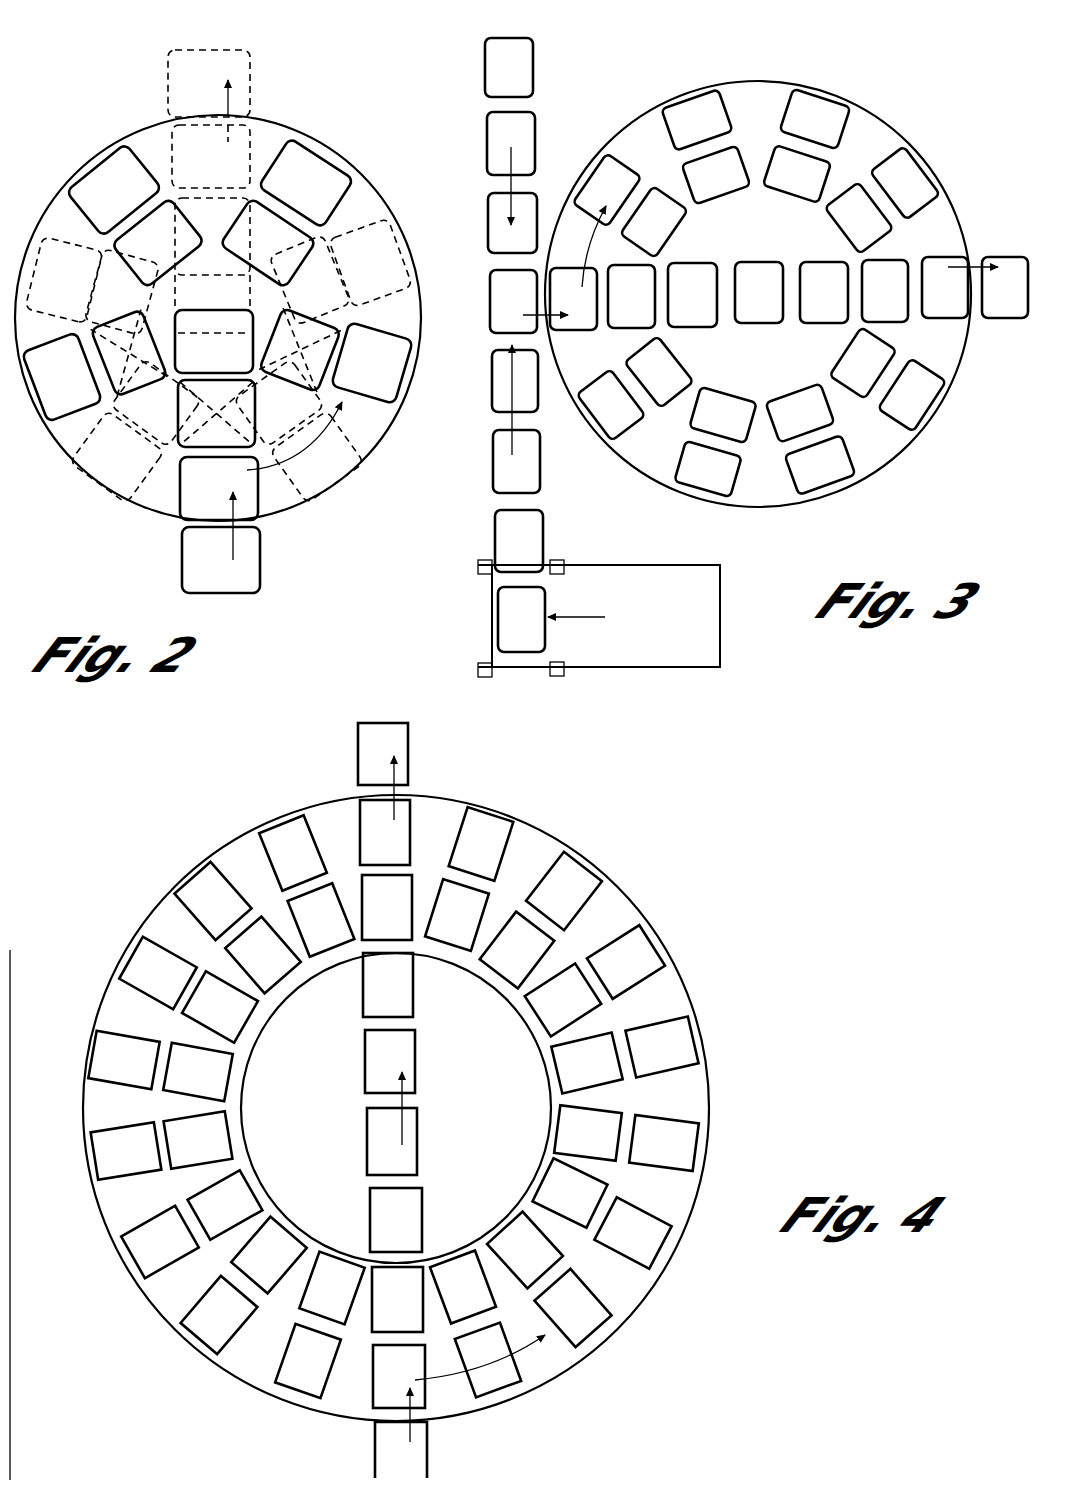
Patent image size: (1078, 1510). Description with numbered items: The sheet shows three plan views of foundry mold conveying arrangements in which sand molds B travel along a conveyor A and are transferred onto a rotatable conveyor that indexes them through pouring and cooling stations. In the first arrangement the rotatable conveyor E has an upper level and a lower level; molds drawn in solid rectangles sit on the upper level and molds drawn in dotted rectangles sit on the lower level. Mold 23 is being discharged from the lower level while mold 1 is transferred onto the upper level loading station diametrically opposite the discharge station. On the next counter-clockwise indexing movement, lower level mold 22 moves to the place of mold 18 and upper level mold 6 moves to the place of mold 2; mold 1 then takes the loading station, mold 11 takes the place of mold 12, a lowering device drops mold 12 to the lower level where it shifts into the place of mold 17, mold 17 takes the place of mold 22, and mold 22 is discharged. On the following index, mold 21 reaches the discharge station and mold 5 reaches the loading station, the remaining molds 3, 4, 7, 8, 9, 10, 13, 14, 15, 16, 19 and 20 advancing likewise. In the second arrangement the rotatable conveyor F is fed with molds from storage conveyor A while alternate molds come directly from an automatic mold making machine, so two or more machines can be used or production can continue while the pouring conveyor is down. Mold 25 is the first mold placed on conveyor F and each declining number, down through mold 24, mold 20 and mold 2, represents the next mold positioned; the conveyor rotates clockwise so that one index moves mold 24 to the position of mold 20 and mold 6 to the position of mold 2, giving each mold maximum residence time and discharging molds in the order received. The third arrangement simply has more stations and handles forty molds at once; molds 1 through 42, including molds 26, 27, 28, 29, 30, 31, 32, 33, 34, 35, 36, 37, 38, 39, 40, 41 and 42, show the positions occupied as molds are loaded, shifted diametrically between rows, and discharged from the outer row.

In FIG. 2, the mold 1 is at (221, 560).
In FIG. 3, the mold 1 is at (513, 301).
In FIG. 4, the mold 1 is at (401, 1450).
In FIG. 2, the mold 2 is at (219, 508).
In FIG. 3, the mold 2 is at (560, 299).
In FIG. 4, the mold 2 is at (399, 1393).
In FIG. 2, the mold 3 is at (330, 396).
In FIG. 3, the mold 3 is at (696, 119).
In FIG. 4, the mold 3 is at (513, 1324).
In FIG. 2, the mold 4 is at (305, 183).
In FIG. 3, the mold 4 is at (905, 182).
In FIG. 4, the mold 4 is at (664, 1143).
In FIG. 2, the mold 5 is at (114, 190).
In FIG. 3, the mold 5 is at (912, 394).
In FIG. 4, the mold 5 is at (626, 962).
In FIG. 2, the mold 6 is at (62, 377).
In FIG. 3, the mold 6 is at (707, 469).
In FIG. 4, the mold 6 is at (481, 844).
In FIG. 2, the mold 7 is at (216, 413).
In FIG. 3, the mold 7 is at (631, 296).
In FIG. 4, the mold 7 is at (293, 852).
In FIG. 2, the mold 8 is at (300, 350).
In FIG. 3, the mold 8 is at (716, 175).
In FIG. 4, the mold 8 is at (158, 973).
In FIG. 2, the mold 9 is at (268, 243).
In FIG. 3, the mold 9 is at (859, 218).
In FIG. 4, the mold 9 is at (126, 1150).
In FIG. 2, the mold 10 is at (158, 243).
In FIG. 3, the mold 10 is at (863, 363).
In FIG. 4, the mold 10 is at (219, 1315).
In FIG. 2, the mold 11 is at (129, 353).
In FIG. 3, the mold 11 is at (722, 415).
In FIG. 4, the mold 11 is at (397, 1299).
In FIG. 2, the mold 12 is at (214, 341).
In FIG. 3, the mold 12 is at (692, 295).
In FIG. 4, the mold 12 is at (525, 1250).
In FIG. 2, the mold 13 is at (212, 252).
In FIG. 3, the mold 13 is at (759, 292).
In FIG. 4, the mold 13 is at (588, 1133).
In FIG. 2, the mold 14 is at (121, 292).
In FIG. 3, the mold 14 is at (824, 292).
In FIG. 4, the mold 14 is at (563, 1000).
In FIG. 2, the mold 15 is at (156, 403).
In FIG. 3, the mold 15 is at (885, 291).
In FIG. 4, the mold 15 is at (457, 915).
In FIG. 2, the mold 16 is at (279, 403).
In FIG. 3, the mold 16 is at (800, 412).
In FIG. 4, the mold 16 is at (321, 919).
In FIG. 2, the mold 17 is at (310, 280).
In FIG. 3, the mold 17 is at (659, 372).
In FIG. 4, the mold 17 is at (220, 1006).
In FIG. 2, the mold 18 is at (211, 156).
In FIG. 3, the mold 18 is at (654, 222).
In FIG. 4, the mold 18 is at (198, 1139).
In FIG. 2, the mold 19 is at (64, 280).
In FIG. 3, the mold 19 is at (797, 174).
In FIG. 4, the mold 19 is at (269, 1255).
In FIG. 2, the mold 20 is at (117, 457).
In FIG. 3, the mold 20 is at (945, 287).
In FIG. 4, the mold 20 is at (396, 1220).
In FIG. 2, the mold 21 is at (317, 457).
In FIG. 3, the mold 21 is at (820, 465).
In FIG. 4, the mold 21 is at (392, 1141).
In FIG. 2, the mold 22 is at (371, 262).
In FIG. 3, the mold 22 is at (611, 405).
In FIG. 4, the mold 22 is at (390, 1087).
In FIG. 2, the mold 23 is at (209, 83).
In FIG. 3, the mold 23 is at (607, 220).
In FIG. 4, the mold 23 is at (388, 985).
In FIG. 3, the mold 24 is at (815, 119).
In FIG. 4, the mold 24 is at (387, 907).
In FIG. 3, the mold 25 is at (988, 287).
In FIG. 4, the mold 25 is at (263, 955).
In FIG. 4, the mold 26 is at (198, 1072).
In FIG. 4, the mold 27 is at (225, 1205).
In FIG. 4, the mold 28 is at (331, 1288).
In FIG. 4, the mold 29 is at (463, 1286).
In FIG. 4, the mold 30 is at (570, 1192).
In FIG. 4, the mold 31 is at (586, 1063).
In FIG. 4, the mold 32 is at (517, 950).
In FIG. 4, the mold 33 is at (385, 832).
In FIG. 4, the mold 34 is at (212, 901).
In FIG. 4, the mold 35 is at (123, 1060).
In FIG. 4, the mold 36 is at (160, 1242).
In FIG. 4, the mold 37 is at (308, 1361).
In FIG. 4, the mold 38 is at (488, 1360).
In FIG. 4, the mold 39 is at (632, 1232).
In FIG. 4, the mold 40 is at (661, 1046).
In FIG. 4, the mold 41 is at (564, 891).
In FIG. 4, the mold 42 is at (383, 771).
In FIG. 3, the conveyor A is at (679, 670).
In FIG. 3, the mold B is at (495, 614).
In FIG. 2, the rotatable conveyor E is at (373, 176).
In FIG. 3, the rotatable conveyor F is at (878, 100).